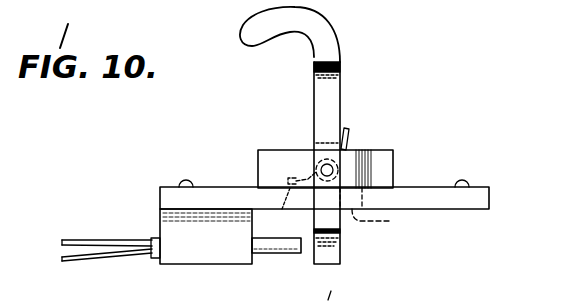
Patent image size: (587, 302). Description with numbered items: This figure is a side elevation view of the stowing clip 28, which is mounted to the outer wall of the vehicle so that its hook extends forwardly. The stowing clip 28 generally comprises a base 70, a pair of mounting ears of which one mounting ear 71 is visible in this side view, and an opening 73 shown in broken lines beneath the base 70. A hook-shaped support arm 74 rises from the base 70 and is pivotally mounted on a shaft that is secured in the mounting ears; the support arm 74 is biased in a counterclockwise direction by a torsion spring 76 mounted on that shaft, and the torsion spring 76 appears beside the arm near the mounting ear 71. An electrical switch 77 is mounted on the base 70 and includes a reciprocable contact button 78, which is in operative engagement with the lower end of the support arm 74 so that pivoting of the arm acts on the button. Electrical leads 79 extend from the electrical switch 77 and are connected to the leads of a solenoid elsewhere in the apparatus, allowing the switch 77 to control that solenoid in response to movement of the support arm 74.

The stowing clip 28 is at (450, 62).
The base 70 is at (421, 196).
The mounting ear 71 is at (273, 158).
The opening 73 is at (384, 224).
The hook-shaped support arm 74 is at (322, 85).
The torsion spring 76 is at (352, 130).
The electrical switch 77 is at (195, 252).
The reciprocable contact button 78 is at (272, 250).
The electrical leads 79 is at (109, 242).